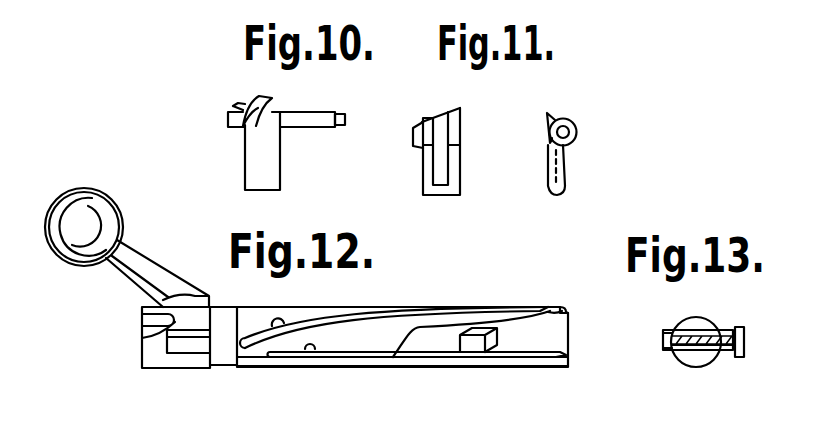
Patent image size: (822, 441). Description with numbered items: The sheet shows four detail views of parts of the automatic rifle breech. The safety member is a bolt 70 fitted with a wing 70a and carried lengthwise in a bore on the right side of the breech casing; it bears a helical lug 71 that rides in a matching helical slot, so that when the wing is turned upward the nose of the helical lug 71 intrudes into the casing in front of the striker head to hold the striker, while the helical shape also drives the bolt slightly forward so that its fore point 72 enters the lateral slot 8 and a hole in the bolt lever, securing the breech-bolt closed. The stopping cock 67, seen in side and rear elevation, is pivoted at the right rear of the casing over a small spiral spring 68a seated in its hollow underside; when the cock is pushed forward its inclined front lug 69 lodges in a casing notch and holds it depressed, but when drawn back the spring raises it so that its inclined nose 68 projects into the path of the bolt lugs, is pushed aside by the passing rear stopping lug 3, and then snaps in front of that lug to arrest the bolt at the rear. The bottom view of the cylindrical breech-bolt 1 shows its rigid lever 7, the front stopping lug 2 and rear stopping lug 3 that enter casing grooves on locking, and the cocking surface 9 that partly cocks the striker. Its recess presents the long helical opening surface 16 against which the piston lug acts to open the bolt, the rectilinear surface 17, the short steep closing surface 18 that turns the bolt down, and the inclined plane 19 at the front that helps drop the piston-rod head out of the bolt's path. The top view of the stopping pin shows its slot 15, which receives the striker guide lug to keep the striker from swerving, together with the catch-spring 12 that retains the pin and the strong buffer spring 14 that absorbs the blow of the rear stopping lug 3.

In FIG. 10, the bolt 70 is at (283, 116).
In FIG. 10, the wing 70a is at (258, 166).
In FIG. 10, the helical lug 71 is at (275, 98).
In FIG. 10, the fore point 72 is at (340, 113).
In FIG. 11, the stopping cock 67 is at (522, 170).
In FIG. 11, the inclined nose 68 is at (552, 114).
In FIG. 11, the spiral spring 68a is at (566, 153).
In FIG. 11, the inclined front lug 69 is at (415, 128).
In FIG. 12, the lever 7 is at (158, 264).
In FIG. 12, the cocking surface 9 is at (142, 324).
In FIG. 12, the stopping lug 3 is at (190, 347).
In FIG. 12, the breech-bolt 1 is at (296, 320).
In FIG. 12, the opening surface 16 is at (358, 318).
In FIG. 12, the lateral slot 8 is at (366, 336).
In FIG. 12, the closing surface 18 is at (418, 326).
In FIG. 12, the rectilinear surface 17 is at (300, 355).
In FIG. 12, the stopping lug 2 is at (472, 347).
In FIG. 12, the inclined plane 19 is at (563, 311).
In FIG. 13, the catch-spring 12 is at (662, 348).
In FIG. 13, the slot 15 is at (727, 332).
In FIG. 13, the buffer spring 14 is at (744, 343).